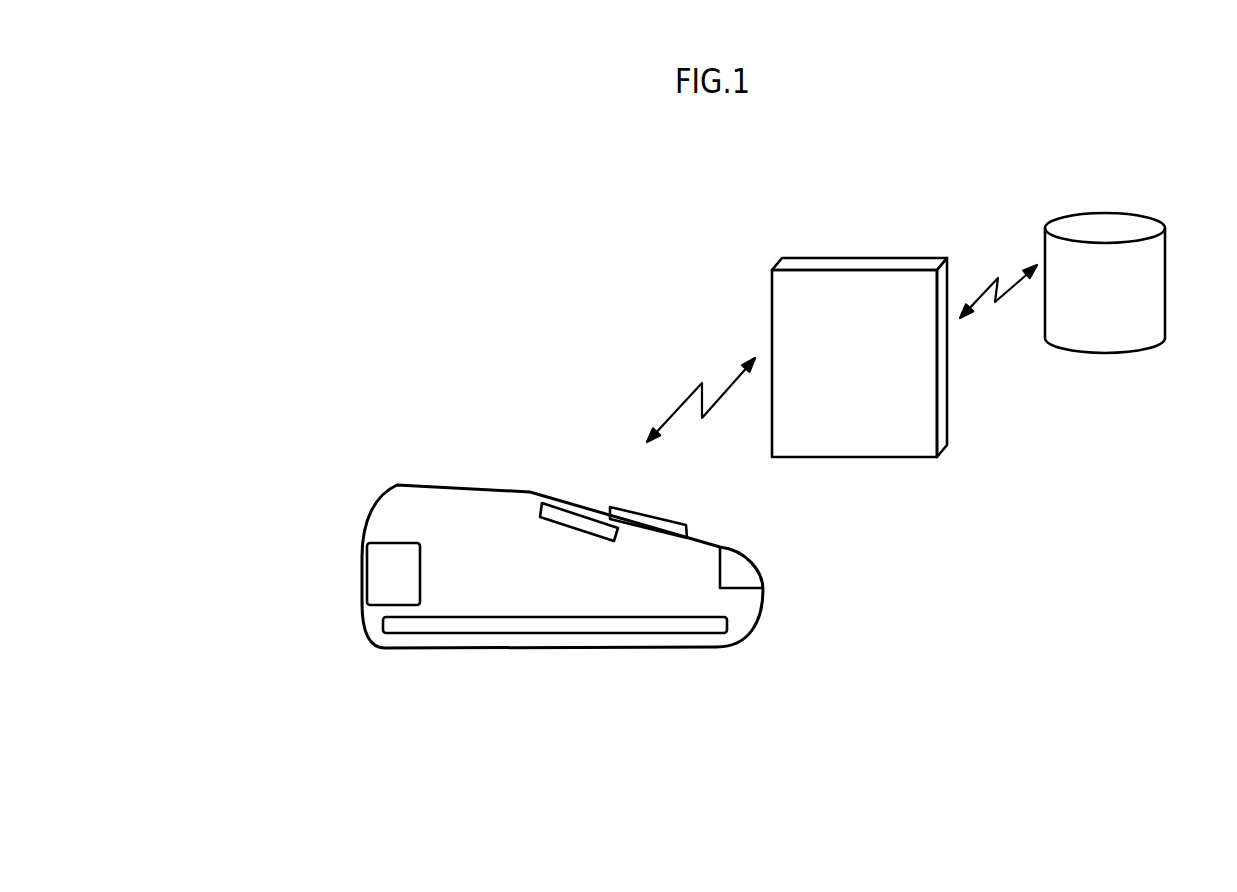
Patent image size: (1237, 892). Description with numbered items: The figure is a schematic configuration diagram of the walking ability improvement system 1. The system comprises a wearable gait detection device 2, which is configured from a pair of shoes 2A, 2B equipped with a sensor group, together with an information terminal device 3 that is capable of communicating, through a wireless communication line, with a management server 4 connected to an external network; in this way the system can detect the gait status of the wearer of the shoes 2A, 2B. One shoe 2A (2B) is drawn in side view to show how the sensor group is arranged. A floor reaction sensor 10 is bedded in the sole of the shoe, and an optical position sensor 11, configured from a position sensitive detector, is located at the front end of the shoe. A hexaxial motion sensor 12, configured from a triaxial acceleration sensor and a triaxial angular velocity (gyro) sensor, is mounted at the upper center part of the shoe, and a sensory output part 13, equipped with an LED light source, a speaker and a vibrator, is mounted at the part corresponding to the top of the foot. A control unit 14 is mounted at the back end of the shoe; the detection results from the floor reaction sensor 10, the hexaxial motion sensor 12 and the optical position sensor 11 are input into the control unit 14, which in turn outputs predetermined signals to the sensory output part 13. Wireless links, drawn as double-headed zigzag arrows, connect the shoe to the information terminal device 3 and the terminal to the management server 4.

The walking ability improvement system 1 is at (746, 779).
The wearable gait detection device 2 is at (390, 679).
The shoe 2A is at (515, 541).
The shoe 2B is at (383, 502).
The information terminal device 3 is at (937, 411).
The management server 4 is at (1165, 307).
The floor reaction sensor 10 is at (606, 633).
The optical position sensor 11 is at (738, 565).
The hexaxial motion sensor 12 is at (645, 510).
The sensory output part 13 is at (574, 520).
The control unit 14 is at (375, 578).